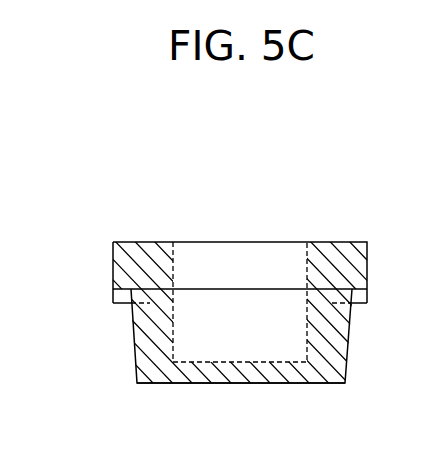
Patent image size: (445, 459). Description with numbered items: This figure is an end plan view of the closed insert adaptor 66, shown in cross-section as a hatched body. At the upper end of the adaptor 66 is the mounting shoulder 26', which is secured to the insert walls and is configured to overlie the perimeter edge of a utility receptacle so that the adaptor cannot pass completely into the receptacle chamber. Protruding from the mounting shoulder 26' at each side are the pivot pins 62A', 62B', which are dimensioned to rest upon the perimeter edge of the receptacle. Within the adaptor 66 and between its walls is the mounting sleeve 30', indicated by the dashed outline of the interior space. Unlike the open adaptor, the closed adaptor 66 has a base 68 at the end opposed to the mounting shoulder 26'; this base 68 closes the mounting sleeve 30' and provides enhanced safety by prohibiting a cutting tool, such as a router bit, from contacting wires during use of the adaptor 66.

The closed insert adaptor 66 is at (366, 242).
The mounting shoulder 26' is at (201, 320).
The mounting sleeve 30' is at (250, 280).
The pivot pin 62A' is at (101, 328).
The pivot pin 62B' is at (382, 326).
The base 68 is at (233, 384).